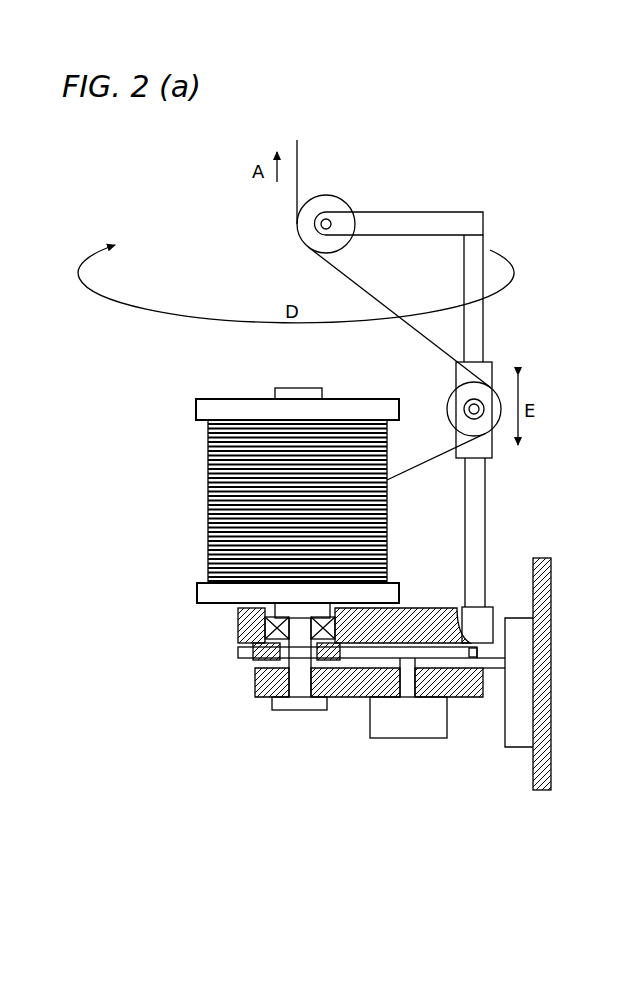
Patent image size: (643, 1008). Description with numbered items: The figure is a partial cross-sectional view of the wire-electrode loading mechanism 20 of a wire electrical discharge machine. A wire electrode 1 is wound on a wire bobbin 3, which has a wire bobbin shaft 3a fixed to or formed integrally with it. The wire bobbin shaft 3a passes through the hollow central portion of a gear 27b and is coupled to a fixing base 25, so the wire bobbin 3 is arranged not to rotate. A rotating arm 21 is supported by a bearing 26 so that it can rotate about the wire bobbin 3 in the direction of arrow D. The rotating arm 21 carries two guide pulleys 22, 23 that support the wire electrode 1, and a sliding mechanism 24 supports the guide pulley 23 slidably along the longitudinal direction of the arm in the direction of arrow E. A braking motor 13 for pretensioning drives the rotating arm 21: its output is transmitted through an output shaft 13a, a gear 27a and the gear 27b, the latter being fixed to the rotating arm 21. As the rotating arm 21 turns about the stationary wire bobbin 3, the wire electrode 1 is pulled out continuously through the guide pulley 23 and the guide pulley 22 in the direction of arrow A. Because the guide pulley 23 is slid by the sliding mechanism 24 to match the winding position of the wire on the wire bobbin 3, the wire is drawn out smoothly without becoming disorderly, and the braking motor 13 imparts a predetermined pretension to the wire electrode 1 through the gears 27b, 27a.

The wire electrode 1 is at (297, 153).
The wire-electrode loading mechanism 20 is at (198, 230).
The guide pulley 22 is at (337, 203).
The guide pulley 23 is at (456, 393).
The sliding mechanism 24 is at (487, 357).
The rotating arm 21 is at (465, 523).
The wire bobbin 3 is at (202, 409).
The wire bobbin shaft 3a is at (302, 697).
The bearing 26 is at (263, 627).
The gear 27b is at (253, 650).
The gear 27a is at (480, 650).
The braking motor 13 is at (412, 740).
The output shaft 13a is at (407, 697).
The fixing base 25 is at (522, 746).